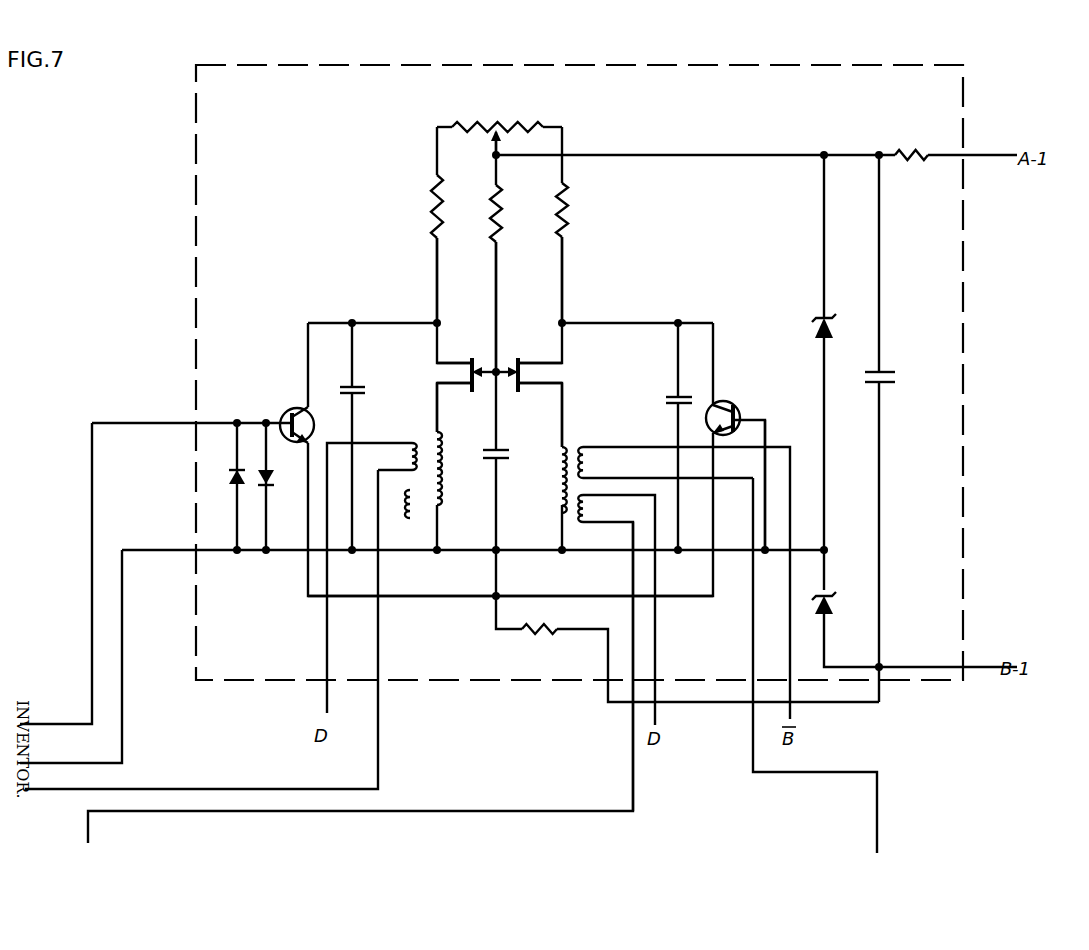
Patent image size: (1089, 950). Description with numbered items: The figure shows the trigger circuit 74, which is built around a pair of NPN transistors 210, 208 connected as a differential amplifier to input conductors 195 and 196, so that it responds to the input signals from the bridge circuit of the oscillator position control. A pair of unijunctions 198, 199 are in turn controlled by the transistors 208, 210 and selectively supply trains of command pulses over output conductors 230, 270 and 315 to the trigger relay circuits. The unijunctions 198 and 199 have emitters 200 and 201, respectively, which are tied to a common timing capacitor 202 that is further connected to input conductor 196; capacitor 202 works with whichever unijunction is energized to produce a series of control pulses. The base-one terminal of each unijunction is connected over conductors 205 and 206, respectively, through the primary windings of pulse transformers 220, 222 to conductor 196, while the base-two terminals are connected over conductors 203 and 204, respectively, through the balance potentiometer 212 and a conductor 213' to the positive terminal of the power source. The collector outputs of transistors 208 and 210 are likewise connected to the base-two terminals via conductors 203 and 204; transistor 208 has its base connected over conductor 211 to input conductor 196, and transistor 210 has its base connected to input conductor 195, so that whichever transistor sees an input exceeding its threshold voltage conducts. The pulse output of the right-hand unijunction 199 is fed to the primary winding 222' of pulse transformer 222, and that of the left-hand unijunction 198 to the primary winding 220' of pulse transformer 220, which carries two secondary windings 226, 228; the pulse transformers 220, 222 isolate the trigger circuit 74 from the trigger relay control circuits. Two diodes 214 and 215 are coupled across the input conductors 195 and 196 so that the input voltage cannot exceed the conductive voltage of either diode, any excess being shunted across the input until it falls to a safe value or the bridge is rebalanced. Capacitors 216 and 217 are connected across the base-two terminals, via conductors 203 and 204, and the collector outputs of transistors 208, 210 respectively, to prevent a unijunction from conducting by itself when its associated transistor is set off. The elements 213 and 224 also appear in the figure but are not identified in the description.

The trigger circuit 74 is at (613, 65).
The balance potentiometer 212 is at (547, 125).
The conductor 213' is at (756, 147).
The resistor 213 is at (516, 278).
The conductor 204 is at (437, 338).
The conductor 203 is at (581, 268).
The emitter 201 is at (484, 361).
The emitter 200 is at (506, 361).
The conductor 206 is at (437, 392).
The unijunction 199 is at (432, 392).
The conductor 205 is at (584, 415).
The unijunction 198 is at (505, 390).
The common timing capacitor 202 is at (481, 440).
The capacitor 217 is at (342, 436).
The transistor 210 is at (303, 405).
The capacitor 216 is at (661, 436).
The transistor 208 is at (728, 408).
The conductor 211 is at (771, 484).
The output conductor 315 is at (752, 480).
The secondary winding 228 is at (684, 583).
The secondary winding 226 is at (616, 653).
The pulse transformer 220 is at (536, 480).
The primary winding 220' is at (529, 518).
The pulse transformer 222 is at (459, 474).
The primary winding 222' is at (410, 517).
The transformer winding 224 is at (372, 578).
The diode 215 is at (229, 477).
The diode 214 is at (280, 477).
The output conductor 270 is at (634, 580).
The input conductor 195 is at (75, 721).
The input conductor 196 is at (75, 761).
The output conductor 230 is at (75, 787).